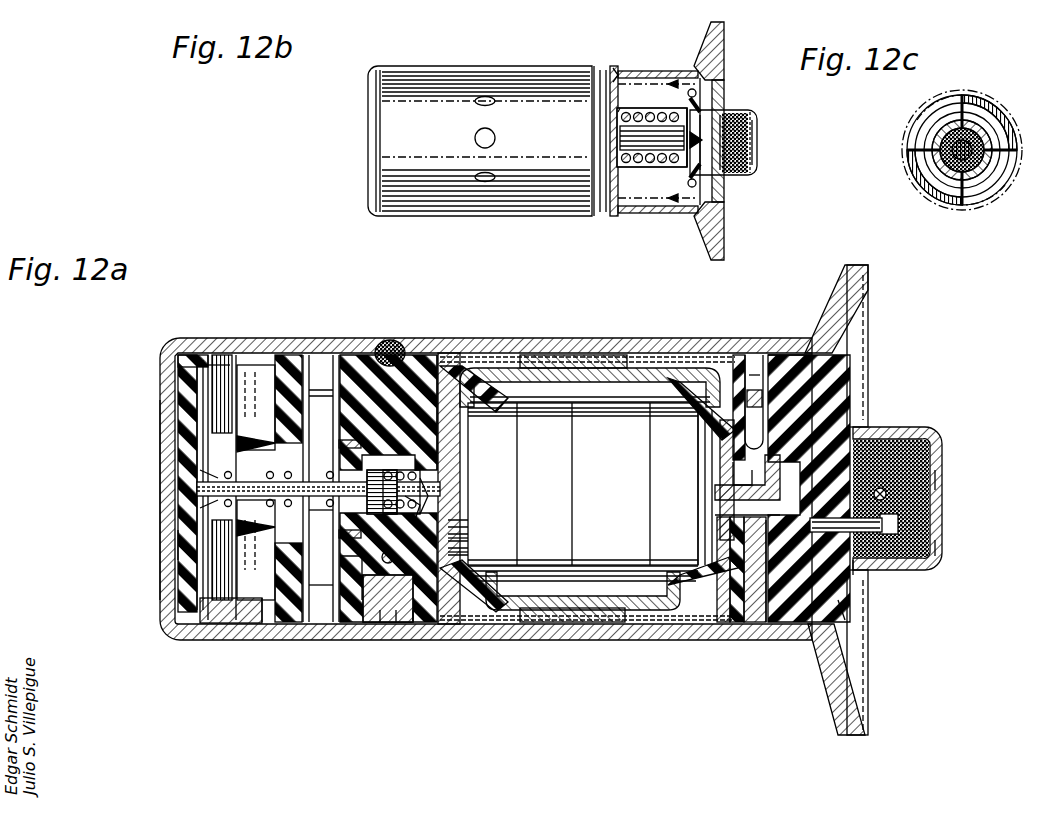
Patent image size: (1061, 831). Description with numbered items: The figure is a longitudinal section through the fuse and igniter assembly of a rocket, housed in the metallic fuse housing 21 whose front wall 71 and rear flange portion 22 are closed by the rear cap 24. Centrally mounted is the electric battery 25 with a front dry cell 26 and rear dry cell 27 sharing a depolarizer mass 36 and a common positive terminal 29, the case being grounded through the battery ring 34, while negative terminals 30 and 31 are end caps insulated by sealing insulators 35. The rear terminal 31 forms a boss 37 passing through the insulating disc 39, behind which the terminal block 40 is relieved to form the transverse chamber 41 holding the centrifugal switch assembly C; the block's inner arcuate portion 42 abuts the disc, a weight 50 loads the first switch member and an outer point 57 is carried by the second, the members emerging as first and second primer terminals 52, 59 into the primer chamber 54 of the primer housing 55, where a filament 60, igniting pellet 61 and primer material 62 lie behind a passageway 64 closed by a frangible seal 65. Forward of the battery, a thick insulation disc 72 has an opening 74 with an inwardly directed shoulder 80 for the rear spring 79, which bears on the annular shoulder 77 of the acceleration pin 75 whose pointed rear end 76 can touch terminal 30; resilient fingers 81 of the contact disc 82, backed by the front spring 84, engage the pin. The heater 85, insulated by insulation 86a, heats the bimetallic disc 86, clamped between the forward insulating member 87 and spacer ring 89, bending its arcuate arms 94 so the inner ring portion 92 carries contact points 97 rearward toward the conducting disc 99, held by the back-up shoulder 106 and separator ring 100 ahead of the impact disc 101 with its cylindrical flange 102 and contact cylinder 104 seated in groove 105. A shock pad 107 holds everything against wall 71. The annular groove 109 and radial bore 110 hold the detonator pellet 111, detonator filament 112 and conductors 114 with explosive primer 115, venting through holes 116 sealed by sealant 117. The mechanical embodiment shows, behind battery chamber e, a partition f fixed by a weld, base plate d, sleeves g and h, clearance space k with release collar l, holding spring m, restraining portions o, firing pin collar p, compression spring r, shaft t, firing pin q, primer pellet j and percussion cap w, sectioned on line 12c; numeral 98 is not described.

In FIG. 12A, the shock pad 107 is at (175, 372).
In FIG. 12A, the front wall 71 is at (162, 450).
In FIG. 12A, the terminal block 40 is at (840, 392).
In FIG. 12A, the flange portion 22 is at (836, 692).
In FIG. 12A, the rear wall or cap 24 is at (845, 612).
In FIG. 12A, the second primer terminal 59 is at (858, 568).
In FIG. 12A, the first primer terminal 52 is at (855, 416).
In FIG. 12A, the weight 50 is at (800, 356).
In FIG. 12A, the primer material 62 is at (905, 430).
In FIG. 12A, the passageway 64 is at (940, 534).
In FIG. 12A, the primer housing 55 is at (938, 556).
In FIG. 12B, the primer housing 55 is at (752, 112).
In FIG. 12A, the frangible seal 65 is at (940, 482).
In FIG. 12B, the frangible seal 65 is at (757, 142).
In FIG. 12A, the igniting pellet 61 is at (912, 500).
In FIG. 12A, the filament 60 is at (900, 522).
In FIG. 12A, the primer chamber 54 is at (868, 500).
In FIG. 12A, the fuse housing 21 is at (528, 352).
In FIG. 12A, the electric battery 25 is at (612, 353).
In FIG. 12A, the battery ring 34 is at (622, 638).
In FIG. 12A, the common positive terminal 29 is at (632, 390).
In FIG. 12A, the forward negative terminal 30 is at (455, 522).
In FIG. 12A, the rear helical compression spring 79 is at (451, 488).
In FIG. 12A, the sealing insulators 35 is at (510, 580).
In FIG. 12A, the front dry cell 26 is at (532, 471).
In FIG. 12A, the depolarizer mass 36 is at (618, 488).
In FIG. 12A, the rear dry cell 27 is at (680, 473).
In FIG. 12A, the detonator pellet 111 is at (455, 545).
In FIG. 12A, the conductors 114 is at (455, 556).
In FIG. 12A, the insulating disc 39 is at (736, 356).
In FIG. 12A, the centrifugal switch assembly C is at (756, 358).
In FIG. 12A, the rear negative terminal 31 is at (740, 478).
In FIG. 12A, the boss 37 is at (740, 505).
In FIG. 12A, the inner arcuate portion 42 is at (746, 540).
In FIG. 12A, the transverse chamber 41 is at (750, 640).
In FIG. 12A, the outer point 57 is at (758, 645).
In FIG. 12A, the electrical resistance heater 85 is at (178, 408).
In FIG. 12A, the contact disc 82 is at (185, 428).
In FIG. 12A, the forward insulating member 87 is at (186, 358).
In FIG. 12A, the electrical insulation layer 86a is at (210, 365).
In FIG. 12A, the bimetallic disc 86 is at (218, 624).
In FIG. 12A, the insulated spacer ring 89 is at (268, 356).
In FIG. 12A, the arcuate arms 94 is at (258, 425).
In FIG. 12A, the electrical contact points 97 is at (300, 356).
In FIG. 12A, the separator ring 100 is at (345, 356).
In FIG. 12A, the annular groove 109 is at (400, 336).
In FIG. 12A, the thick insulation disc 72 is at (437, 356).
In FIG. 12A, the annular groove 105 is at (312, 416).
In FIG. 12A, the cylindrical flange 102 is at (345, 444).
In FIG. 12A, the contact cylinder 104 is at (340, 514).
In FIG. 12A, the lug 98 is at (342, 534).
In FIG. 12A, the impact disc 101 is at (345, 560).
In FIG. 12A, the conducting disc 99 is at (342, 585).
In FIG. 12A, the back-up shoulder 106 is at (258, 622).
In FIG. 12A, the radial bore 110 is at (370, 628).
In FIG. 12A, the explosive primer 115 is at (390, 640).
In FIG. 12A, the burnable sealant 117 is at (402, 640).
In FIG. 12A, the holes 116 is at (405, 640).
In FIG. 12A, the detonator filament 112 is at (388, 562).
In FIG. 12A, the resilient fingers 81 is at (197, 492).
In FIG. 12A, the inner ring portion 92 is at (178, 545).
In FIG. 12A, the front compression spring 84 is at (284, 480).
In FIG. 12A, the acceleration pin 75 is at (326, 484).
In FIG. 12A, the annular shoulder 77 is at (374, 478).
In FIG. 12A, the pointed rear end 76 is at (400, 480).
In FIG. 12A, the axial opening 74 is at (378, 518).
In FIG. 12A, the inwardly directed shoulder 80 is at (436, 514).
In FIG. 12B, the firing pin shaft t is at (598, 220).
In FIG. 12C, the firing pin shaft t is at (1010, 110).
In FIG. 12B, the battery chamber e is at (596, 205).
In FIG. 12B, the partition f is at (614, 68).
In FIG. 12B, the element weld is at (613, 62).
In FIG. 12B, the base plate d is at (630, 80).
In FIG. 12B, the section line 12c is at (680, 78).
In FIG. 12B, the restraining portions o is at (713, 198).
In FIG. 12B, the firing pin collar p is at (674, 118).
In FIG. 12C, the firing pin collar p is at (905, 178).
In FIG. 12B, the compression spring r is at (658, 170).
In FIG. 12B, the sleeve g is at (640, 155).
In FIG. 12B, the holding spring m is at (700, 96).
In FIG. 12C, the holding spring m is at (1016, 125).
In FIG. 12B, the centrifugal release collar l is at (702, 104).
In FIG. 12C, the centrifugal release collar l is at (982, 104).
In FIG. 12B, the clearance space k is at (688, 178).
In FIG. 12B, the primer pellet j is at (750, 126).
In FIG. 12B, the percussion cap w is at (757, 162).
In FIG. 12B, the sleeve h is at (725, 176).
In FIG. 12C, the firing pin q is at (935, 130).